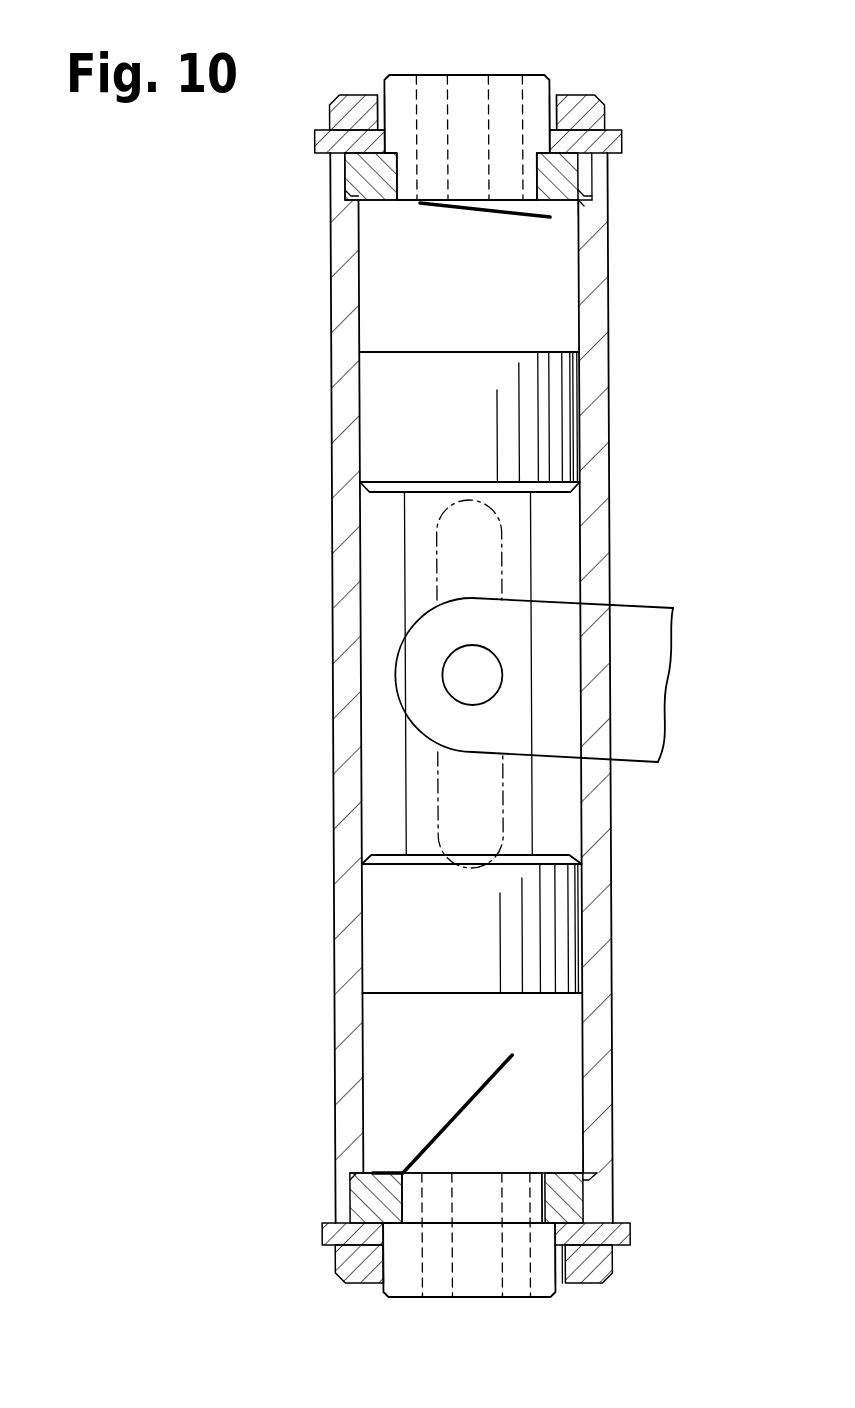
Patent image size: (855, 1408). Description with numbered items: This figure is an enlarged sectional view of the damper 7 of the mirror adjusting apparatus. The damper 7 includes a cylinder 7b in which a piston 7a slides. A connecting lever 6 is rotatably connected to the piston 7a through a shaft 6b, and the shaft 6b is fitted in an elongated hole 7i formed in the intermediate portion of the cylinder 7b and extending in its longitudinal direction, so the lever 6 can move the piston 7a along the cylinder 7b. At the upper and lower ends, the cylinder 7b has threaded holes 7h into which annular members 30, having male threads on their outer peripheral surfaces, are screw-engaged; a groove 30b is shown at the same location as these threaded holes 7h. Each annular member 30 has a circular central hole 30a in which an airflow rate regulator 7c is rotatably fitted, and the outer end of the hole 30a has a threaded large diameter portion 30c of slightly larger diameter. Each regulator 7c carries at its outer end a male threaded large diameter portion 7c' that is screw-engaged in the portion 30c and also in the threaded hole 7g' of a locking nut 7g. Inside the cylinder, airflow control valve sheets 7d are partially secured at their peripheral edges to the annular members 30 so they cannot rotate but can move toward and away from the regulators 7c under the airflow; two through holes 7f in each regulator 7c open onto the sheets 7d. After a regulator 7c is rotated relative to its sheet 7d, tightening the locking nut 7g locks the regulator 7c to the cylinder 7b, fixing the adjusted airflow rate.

The connecting lever 6 is at (655, 615).
The shaft 6b is at (395, 672).
The damper 7 is at (262, 737).
The piston 7a is at (375, 417).
The cylinder 7b is at (333, 598).
The airflow rate regulator 7c is at (436, 693).
The threaded large diameter portion 7c' is at (519, 679).
The airflow control valve sheet 7d is at (442, 210).
The through hole 7f is at (422, 100).
The locking nut 7g is at (506, 661).
The threaded hole 7g' is at (519, 679).
The threaded hole 7h is at (585, 189).
The elongated hole 7i is at (492, 590).
The annular member 30 is at (565, 173).
The circular central hole 30a is at (545, 205).
The engaging groove 30b is at (557, 699).
The threaded large diameter portion 30c is at (563, 140).